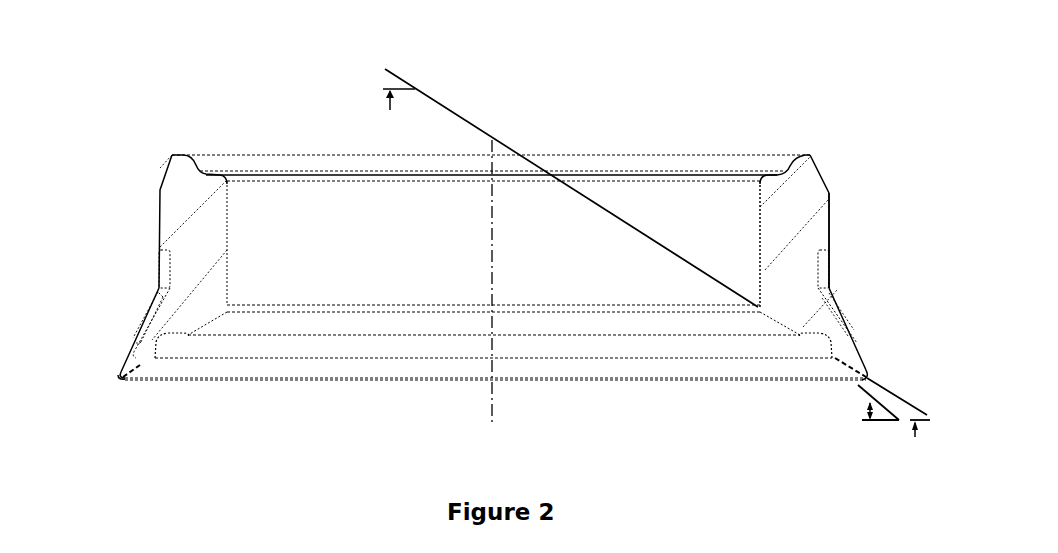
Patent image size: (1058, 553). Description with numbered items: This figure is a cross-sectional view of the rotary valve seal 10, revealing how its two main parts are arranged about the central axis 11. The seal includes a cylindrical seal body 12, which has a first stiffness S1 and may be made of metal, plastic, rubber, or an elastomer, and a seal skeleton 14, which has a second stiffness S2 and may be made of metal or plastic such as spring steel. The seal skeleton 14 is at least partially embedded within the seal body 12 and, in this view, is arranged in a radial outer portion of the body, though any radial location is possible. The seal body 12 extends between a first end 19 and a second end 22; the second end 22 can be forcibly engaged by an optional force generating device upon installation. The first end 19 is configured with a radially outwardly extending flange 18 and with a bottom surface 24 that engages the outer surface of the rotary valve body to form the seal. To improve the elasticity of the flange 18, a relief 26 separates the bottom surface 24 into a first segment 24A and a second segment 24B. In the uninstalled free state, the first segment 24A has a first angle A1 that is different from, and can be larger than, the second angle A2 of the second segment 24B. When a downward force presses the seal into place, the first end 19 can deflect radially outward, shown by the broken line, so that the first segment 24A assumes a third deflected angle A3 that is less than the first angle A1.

The rotary valve seal 10 is at (836, 153).
The central axis 11 is at (491, 420).
The cylindrical seal body 12 is at (853, 236).
The first stiffness S1 is at (815, 207).
The seal skeleton 14 is at (106, 303).
The second stiffness S2 is at (163, 275).
The radially outwardly extending flange 18 is at (853, 357).
The first end 19 is at (120, 380).
The second end 22 is at (806, 157).
The bottom surface 24 is at (138, 370).
The first segment 24A is at (142, 378).
The second segment 24B is at (207, 325).
The relief 26 is at (832, 340).
The first angle A1 is at (872, 407).
The second angle A2 is at (388, 72).
The third deflected angle A3 is at (916, 407).